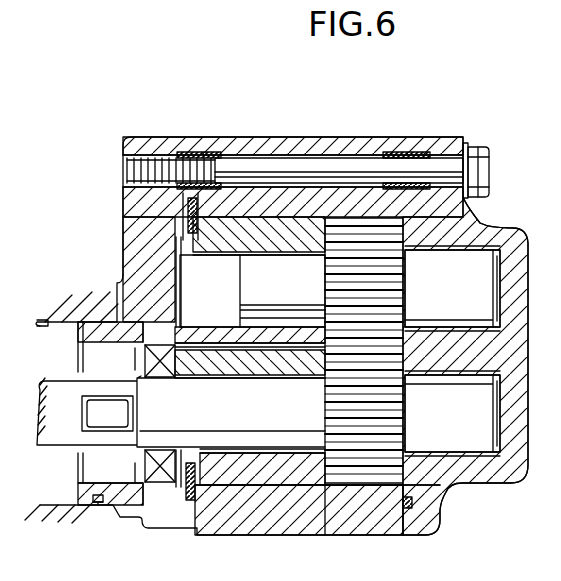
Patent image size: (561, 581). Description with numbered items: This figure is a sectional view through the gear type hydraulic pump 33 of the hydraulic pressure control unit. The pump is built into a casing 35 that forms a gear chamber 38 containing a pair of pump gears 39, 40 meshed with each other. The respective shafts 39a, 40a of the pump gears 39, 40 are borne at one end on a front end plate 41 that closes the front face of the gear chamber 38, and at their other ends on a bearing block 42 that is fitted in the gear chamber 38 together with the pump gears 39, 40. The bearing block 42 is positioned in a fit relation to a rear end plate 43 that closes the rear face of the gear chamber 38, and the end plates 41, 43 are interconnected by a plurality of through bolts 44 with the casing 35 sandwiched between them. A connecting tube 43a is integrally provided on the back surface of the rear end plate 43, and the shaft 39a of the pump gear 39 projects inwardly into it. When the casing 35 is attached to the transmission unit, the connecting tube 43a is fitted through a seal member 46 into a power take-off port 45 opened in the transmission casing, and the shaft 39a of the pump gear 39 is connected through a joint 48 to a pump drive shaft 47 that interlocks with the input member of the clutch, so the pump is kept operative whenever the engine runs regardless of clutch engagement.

The hydraulic pump 33 is at (354, 206).
The casing 35 is at (289, 147).
The gear chamber 38 is at (333, 486).
The pump gear 39 is at (371, 472).
The shaft 39a is at (270, 441).
The pump gear 40 is at (398, 283).
The shaft 40a is at (246, 280).
The front end plate 41 is at (478, 229).
The bearing block 42 is at (224, 478).
The rear end plate 43 is at (170, 522).
The connecting tube 43a is at (93, 498).
The through bolt 44 is at (482, 167).
The power take-off port 45 is at (44, 322).
The seal member 46 is at (98, 504).
The pump drive shaft 47 is at (47, 412).
The joint 48 is at (106, 378).